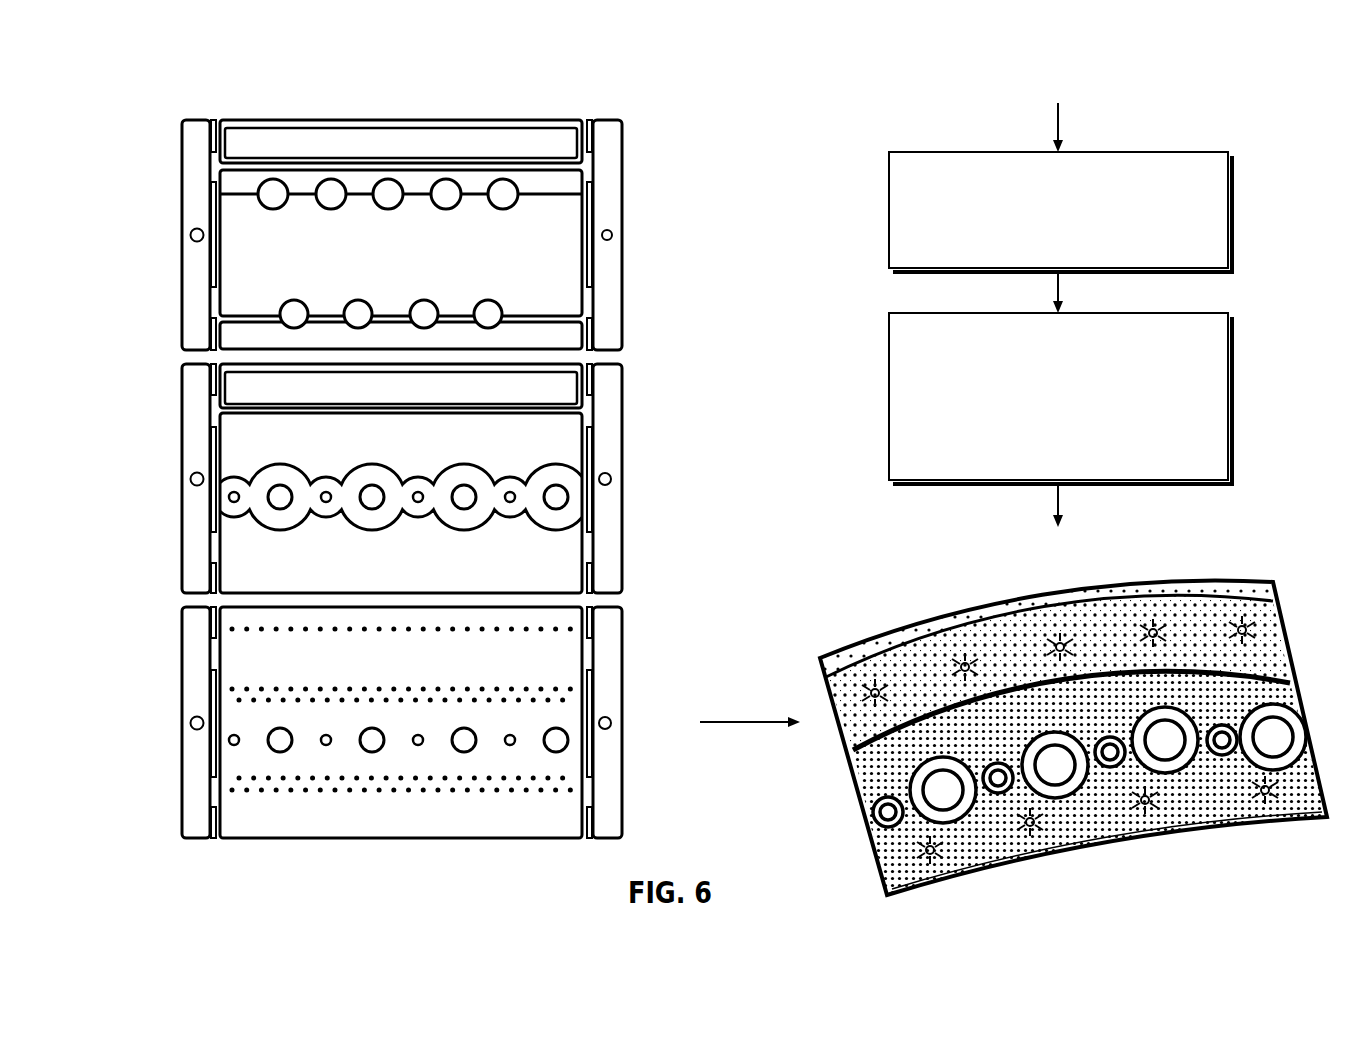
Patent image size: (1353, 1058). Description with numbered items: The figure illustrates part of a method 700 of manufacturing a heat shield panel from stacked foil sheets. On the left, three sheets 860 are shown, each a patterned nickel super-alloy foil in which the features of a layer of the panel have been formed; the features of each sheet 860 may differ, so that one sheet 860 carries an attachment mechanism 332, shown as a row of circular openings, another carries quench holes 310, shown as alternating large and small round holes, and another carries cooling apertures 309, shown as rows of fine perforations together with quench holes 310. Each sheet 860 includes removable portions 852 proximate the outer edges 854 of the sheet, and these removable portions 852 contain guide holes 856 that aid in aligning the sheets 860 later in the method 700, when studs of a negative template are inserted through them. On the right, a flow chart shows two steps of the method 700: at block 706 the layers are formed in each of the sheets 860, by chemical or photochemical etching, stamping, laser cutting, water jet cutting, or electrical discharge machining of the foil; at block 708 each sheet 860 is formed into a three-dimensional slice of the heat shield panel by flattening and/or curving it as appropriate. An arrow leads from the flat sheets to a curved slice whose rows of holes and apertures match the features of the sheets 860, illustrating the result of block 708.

The removable portion 852 is at (197, 133).
The outer edge 854 is at (585, 127).
The guide hole 856 is at (612, 233).
The sheet 860 is at (634, 160).
The attachment mechanism 332 is at (332, 196).
The quench hole 310 is at (372, 495).
The cooling aperture 309 is at (417, 690).
The method 700 is at (935, 67).
The block 706 is at (935, 152).
The block 708 is at (935, 313).